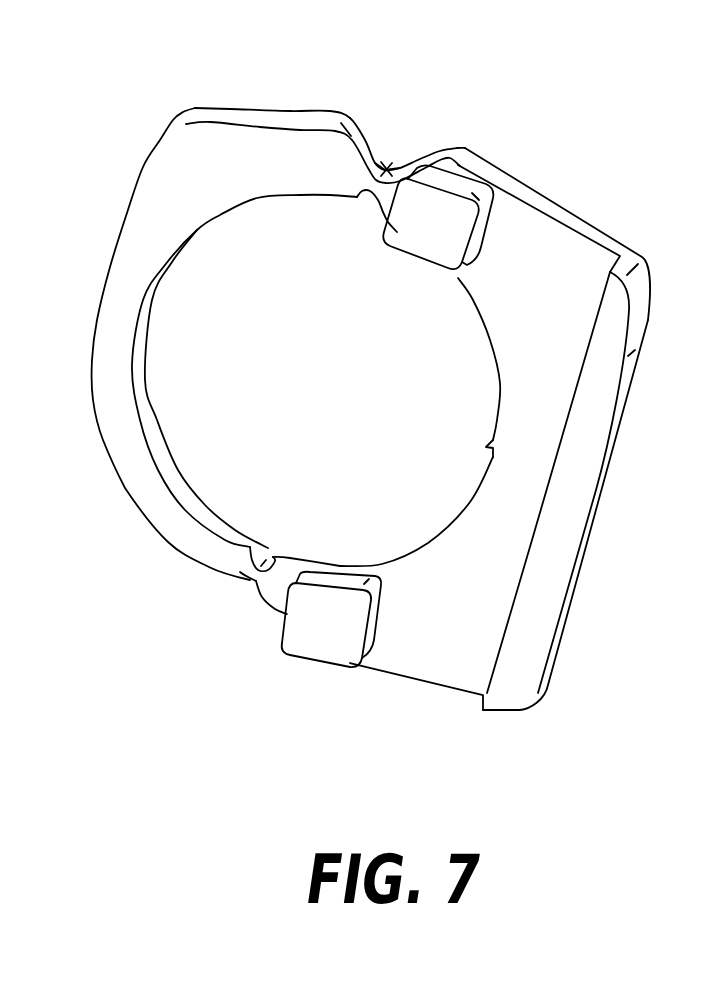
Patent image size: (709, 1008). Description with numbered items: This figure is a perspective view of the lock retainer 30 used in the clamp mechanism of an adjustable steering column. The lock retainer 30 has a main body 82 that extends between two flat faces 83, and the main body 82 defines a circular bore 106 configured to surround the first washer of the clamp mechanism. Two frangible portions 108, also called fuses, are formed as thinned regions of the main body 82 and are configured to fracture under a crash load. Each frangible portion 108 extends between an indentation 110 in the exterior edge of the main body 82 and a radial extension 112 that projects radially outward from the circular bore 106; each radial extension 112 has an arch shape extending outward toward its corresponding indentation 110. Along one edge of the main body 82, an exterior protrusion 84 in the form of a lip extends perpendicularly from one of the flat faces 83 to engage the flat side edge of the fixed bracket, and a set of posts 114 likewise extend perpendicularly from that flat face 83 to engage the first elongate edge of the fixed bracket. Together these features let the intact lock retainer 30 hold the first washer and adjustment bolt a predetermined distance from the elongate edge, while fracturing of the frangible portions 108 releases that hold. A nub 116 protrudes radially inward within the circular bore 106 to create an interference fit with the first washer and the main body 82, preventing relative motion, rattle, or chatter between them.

The lock retainer 30 is at (137, 84).
The main body 82 is at (580, 396).
The flat faces 83 is at (534, 209).
The exterior protrusion 84 is at (613, 345).
The circular bore 106 is at (257, 198).
The frangible portions 108 is at (344, 126).
The indentation 110 is at (387, 170).
The radial extension 112 is at (370, 204).
The posts 114 is at (437, 236).
The nub 116 is at (487, 450).